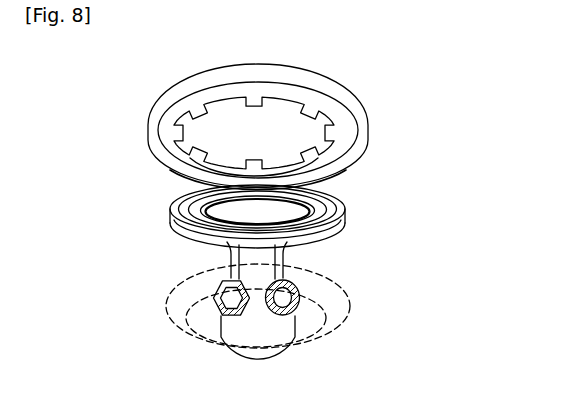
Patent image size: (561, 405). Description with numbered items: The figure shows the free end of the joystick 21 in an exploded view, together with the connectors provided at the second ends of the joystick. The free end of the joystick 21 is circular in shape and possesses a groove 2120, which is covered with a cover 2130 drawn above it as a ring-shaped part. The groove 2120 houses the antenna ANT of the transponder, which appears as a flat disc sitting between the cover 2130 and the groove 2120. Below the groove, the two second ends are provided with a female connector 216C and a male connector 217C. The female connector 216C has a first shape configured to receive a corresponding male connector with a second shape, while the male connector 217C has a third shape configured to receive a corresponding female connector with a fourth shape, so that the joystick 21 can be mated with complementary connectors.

The joystick 21 is at (140, 122).
The cover 2130 is at (366, 121).
The antenna ANT is at (345, 186).
The groove 2120 is at (170, 224).
The female connector 216C is at (190, 322).
The male connector 217C is at (333, 321).